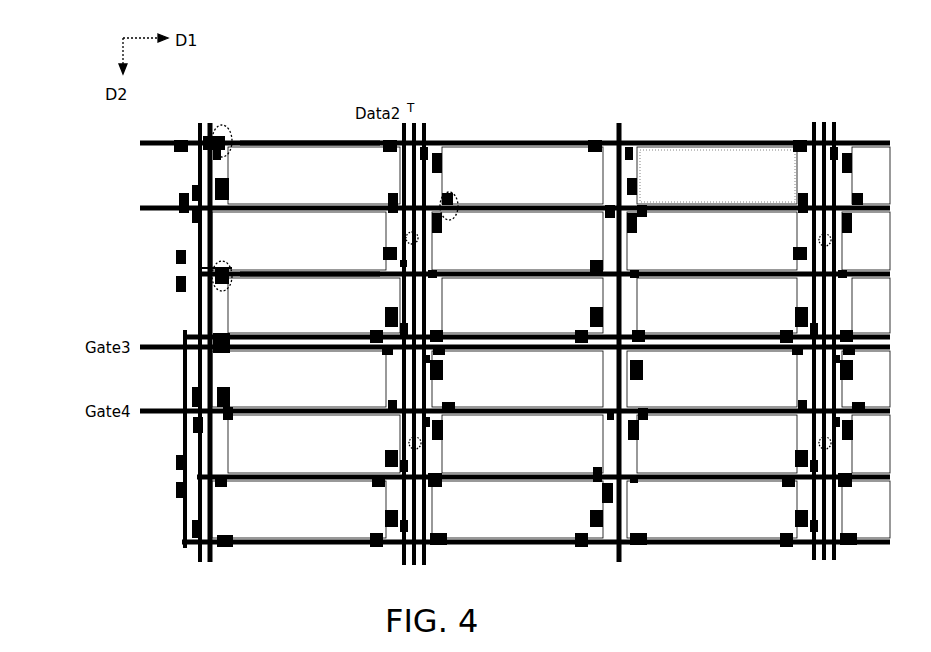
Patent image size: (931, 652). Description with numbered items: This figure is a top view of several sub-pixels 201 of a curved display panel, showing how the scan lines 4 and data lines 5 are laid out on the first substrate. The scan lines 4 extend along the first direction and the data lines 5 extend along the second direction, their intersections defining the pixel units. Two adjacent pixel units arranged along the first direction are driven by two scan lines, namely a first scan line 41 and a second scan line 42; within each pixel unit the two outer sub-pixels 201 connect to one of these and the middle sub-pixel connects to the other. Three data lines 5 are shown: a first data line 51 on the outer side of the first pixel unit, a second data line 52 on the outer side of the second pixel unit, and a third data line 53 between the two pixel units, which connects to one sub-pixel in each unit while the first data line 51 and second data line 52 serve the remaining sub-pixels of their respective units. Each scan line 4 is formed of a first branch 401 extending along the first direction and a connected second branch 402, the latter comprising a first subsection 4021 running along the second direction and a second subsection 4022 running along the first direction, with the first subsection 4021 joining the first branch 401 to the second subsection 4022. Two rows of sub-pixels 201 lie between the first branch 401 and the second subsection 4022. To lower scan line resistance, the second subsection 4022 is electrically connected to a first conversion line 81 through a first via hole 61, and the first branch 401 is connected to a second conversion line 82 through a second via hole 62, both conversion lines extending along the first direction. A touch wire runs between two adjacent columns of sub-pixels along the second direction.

The scan line 4 is at (464, 209).
The data line 5 is at (195, 320).
The first scan line 41 is at (475, 145).
The second scan line 42 is at (464, 209).
The first data line 51 is at (454, 322).
The second data line 52 is at (628, 333).
The third data line 53 is at (807, 330).
The first via hole 61 is at (235, 132).
The second via hole 62 is at (455, 195).
The first conversion line 81 is at (270, 138).
The second conversion line 82 is at (308, 270).
The sub-pixel 201 is at (715, 178).
The first branch 401 is at (207, 138).
The second branch 402 is at (450, 266).
The first subsection 4021 is at (207, 267).
The second subsection 4022 is at (213, 274).